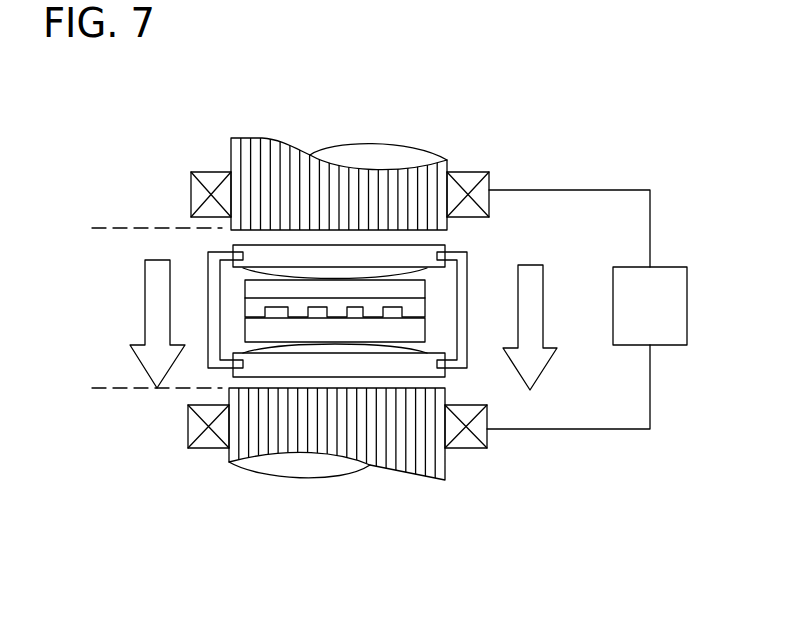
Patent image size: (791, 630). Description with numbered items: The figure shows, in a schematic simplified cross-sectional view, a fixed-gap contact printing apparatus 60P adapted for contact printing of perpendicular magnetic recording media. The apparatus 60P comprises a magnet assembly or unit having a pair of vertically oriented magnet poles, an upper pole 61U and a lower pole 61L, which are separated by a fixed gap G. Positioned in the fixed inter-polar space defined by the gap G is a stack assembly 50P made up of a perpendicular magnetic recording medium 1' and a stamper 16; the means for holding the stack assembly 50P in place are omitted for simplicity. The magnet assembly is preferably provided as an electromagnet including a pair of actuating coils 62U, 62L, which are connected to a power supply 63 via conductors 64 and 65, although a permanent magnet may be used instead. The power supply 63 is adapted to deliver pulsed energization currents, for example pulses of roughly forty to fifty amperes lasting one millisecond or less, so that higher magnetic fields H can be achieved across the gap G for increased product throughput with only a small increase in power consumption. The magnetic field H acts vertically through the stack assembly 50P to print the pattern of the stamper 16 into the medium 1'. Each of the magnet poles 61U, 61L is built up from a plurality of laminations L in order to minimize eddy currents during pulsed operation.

The fixed-gap contact printing apparatus 60P is at (157, 150).
The upper magnet pole 61U is at (256, 130).
The lower magnet pole 61L is at (429, 487).
The upper actuating coil 62U is at (470, 165).
The lower actuating coil 62L is at (490, 458).
The media/stamper stack assembly 50P is at (388, 296).
The perpendicular magnetic recording medium 1' is at (376, 294).
The stamper 16 is at (417, 330).
The power supply 63 is at (662, 317).
The conductor 64 is at (633, 190).
The conductor 65 is at (650, 383).
The laminations L is at (310, 150).
The fixed gap G is at (104, 236).
The magnetic field H is at (343, 325).